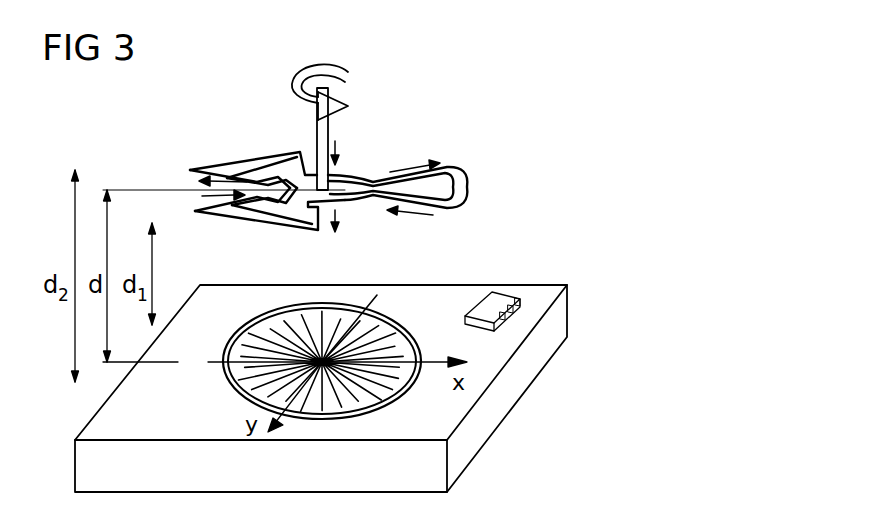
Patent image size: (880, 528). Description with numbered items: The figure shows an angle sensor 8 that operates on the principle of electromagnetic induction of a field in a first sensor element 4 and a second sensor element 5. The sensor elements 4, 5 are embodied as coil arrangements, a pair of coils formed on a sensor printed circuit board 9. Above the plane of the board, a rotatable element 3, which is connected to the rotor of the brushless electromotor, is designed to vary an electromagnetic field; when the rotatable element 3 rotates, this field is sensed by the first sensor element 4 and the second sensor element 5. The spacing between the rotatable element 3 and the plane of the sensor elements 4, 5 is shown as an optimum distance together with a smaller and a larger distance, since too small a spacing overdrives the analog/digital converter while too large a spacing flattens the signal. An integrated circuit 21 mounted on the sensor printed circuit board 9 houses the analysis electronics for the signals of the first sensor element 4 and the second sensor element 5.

The rotatable element 3 is at (463, 187).
The first sensor element 4 is at (328, 393).
The second sensor element 5 is at (350, 393).
The angle sensor 8 is at (470, 107).
The sensor printed circuit board 9 is at (508, 402).
The integrated circuit 21 is at (498, 300).